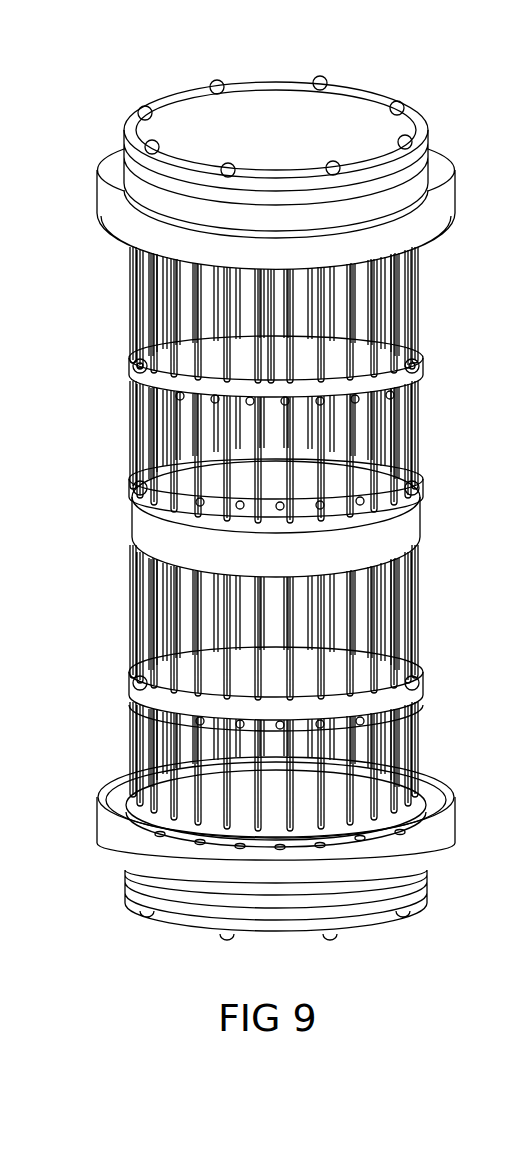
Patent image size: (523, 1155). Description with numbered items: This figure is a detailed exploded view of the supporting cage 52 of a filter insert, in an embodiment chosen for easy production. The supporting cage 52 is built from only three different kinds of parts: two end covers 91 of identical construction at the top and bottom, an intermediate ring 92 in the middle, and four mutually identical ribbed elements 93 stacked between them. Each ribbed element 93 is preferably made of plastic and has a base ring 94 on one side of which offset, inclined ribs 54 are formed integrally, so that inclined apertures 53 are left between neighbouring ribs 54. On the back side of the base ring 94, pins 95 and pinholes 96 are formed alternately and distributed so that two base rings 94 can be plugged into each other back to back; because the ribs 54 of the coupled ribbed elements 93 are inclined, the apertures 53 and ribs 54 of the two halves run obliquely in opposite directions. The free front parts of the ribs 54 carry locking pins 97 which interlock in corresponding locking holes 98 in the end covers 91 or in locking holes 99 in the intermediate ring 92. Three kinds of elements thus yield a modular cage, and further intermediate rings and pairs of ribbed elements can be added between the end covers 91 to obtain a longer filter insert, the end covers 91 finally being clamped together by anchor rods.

The supporting cage 52 is at (420, 90).
The inclined apertures 53 is at (275, 300).
The inclined ribs 54 is at (415, 277).
The end covers 91 is at (173, 102).
The intermediate ring 92 is at (155, 530).
The ribbed elements 93 is at (115, 273).
The base ring 94 is at (412, 340).
The pins 95 is at (418, 363).
The pinholes 96 is at (415, 383).
The locking pins 97 is at (412, 468).
The locking holes 98 is at (397, 820).
The locking holes 99 is at (383, 510).